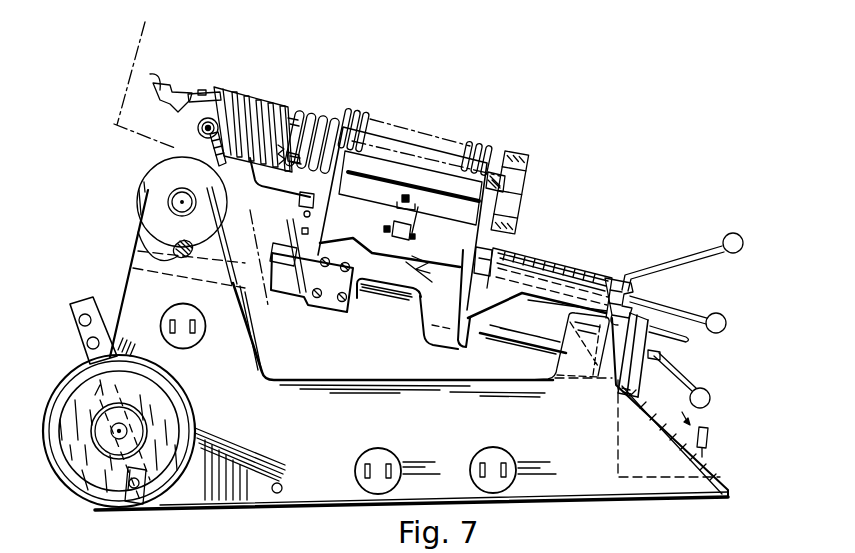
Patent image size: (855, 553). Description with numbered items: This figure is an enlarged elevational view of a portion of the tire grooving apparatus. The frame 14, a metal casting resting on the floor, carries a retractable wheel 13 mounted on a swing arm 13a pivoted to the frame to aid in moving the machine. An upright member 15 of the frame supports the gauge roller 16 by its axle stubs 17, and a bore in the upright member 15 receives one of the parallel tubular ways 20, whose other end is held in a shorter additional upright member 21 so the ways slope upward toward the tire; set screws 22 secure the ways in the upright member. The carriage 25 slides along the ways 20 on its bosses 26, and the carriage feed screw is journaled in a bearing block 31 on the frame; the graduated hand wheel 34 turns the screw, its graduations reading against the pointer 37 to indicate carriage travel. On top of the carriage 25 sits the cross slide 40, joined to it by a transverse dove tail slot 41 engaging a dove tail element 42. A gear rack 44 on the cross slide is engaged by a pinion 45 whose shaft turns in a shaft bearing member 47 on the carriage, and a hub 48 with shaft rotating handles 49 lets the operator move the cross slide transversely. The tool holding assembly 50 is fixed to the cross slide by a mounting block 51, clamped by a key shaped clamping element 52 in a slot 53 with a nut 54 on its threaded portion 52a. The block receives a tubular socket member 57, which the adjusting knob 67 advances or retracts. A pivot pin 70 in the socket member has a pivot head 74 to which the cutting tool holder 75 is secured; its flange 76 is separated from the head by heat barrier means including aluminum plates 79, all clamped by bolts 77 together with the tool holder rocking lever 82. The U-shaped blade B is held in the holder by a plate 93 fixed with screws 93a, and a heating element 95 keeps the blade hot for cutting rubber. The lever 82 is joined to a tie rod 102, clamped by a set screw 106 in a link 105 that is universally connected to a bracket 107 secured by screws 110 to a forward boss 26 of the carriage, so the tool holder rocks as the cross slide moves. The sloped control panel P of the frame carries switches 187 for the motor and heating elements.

The retractable wheels 13 is at (63, 381).
The swing arms 13a is at (78, 338).
The frame 14 is at (147, 38).
The upright members 15 is at (157, 216).
The gauge roller 16 is at (163, 162).
The axle stubs 17 is at (160, 178).
The tubular ways 20 is at (523, 342).
The additional upright members 21 is at (556, 362).
The set screws 22 is at (138, 253).
The carriage 25 is at (397, 284).
The bosses 26 is at (337, 318).
The bearing block 31 is at (228, 290).
The graduated hand wheel 34 is at (654, 352).
The pointer 37 is at (641, 306).
The cross slide 40 is at (461, 276).
The dove tail slot 41 is at (422, 259).
The dove tail element 42 is at (430, 278).
The gear rack 44 is at (503, 250).
The pinion 45 is at (476, 276).
The shaft bearing member 47 is at (565, 270).
The hub 48 is at (617, 280).
The shaft rotating handles 49 is at (713, 254).
The tire grooving tool holding assembly 50 is at (362, 113).
The mounting block 51 is at (410, 151).
The clamping element 52 is at (392, 230).
The threaded portion 52a is at (401, 197).
The slot 53 is at (420, 222).
The nut 54 is at (411, 205).
The tubular socket member 57 is at (318, 119).
The adjusting knob 67 is at (528, 172).
The pivot pin 70 is at (287, 162).
The pivot head 74 is at (262, 163).
The cutting tool holder 75 is at (192, 116).
The flange 76 is at (222, 96).
The bolts 77 is at (298, 114).
The aluminum plates 79 is at (256, 103).
The tool holder rocking lever 82 is at (253, 170).
The plate 93 is at (193, 80).
The screws 93a is at (199, 88).
The heating element 95 is at (197, 128).
The tie rod 102 is at (303, 231).
The link 105 is at (287, 244).
The set screw 106 is at (300, 203).
The bracket 107 is at (300, 310).
The screws 110 is at (352, 302).
The switches 187 is at (708, 425).
The blade B is at (148, 78).
The control panel P is at (678, 417).